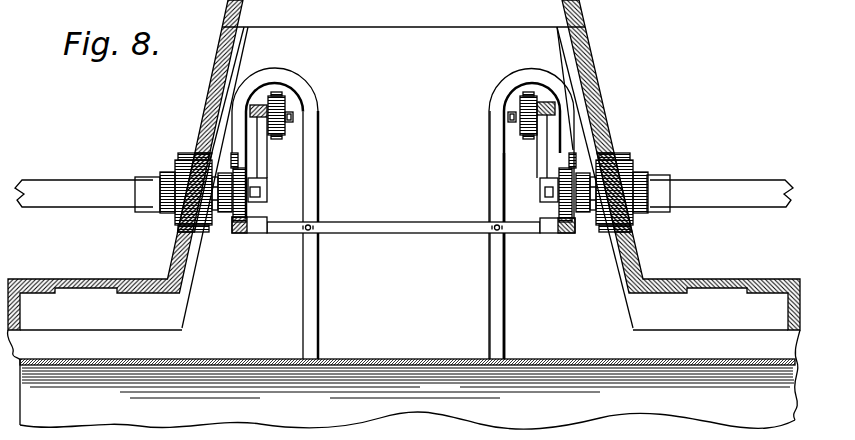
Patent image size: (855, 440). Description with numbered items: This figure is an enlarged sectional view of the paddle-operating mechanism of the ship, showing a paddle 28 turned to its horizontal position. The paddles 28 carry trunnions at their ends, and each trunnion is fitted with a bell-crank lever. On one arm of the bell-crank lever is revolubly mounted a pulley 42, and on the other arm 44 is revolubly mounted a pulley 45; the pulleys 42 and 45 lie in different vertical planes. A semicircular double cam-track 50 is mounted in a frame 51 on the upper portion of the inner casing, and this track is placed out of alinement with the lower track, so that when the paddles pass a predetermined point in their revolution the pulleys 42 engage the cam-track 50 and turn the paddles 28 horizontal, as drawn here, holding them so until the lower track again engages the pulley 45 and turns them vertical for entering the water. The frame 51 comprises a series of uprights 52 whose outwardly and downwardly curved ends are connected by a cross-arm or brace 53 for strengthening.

The paddles 28 is at (85, 200).
The pulley 42 is at (247, 223).
The arm 44 is at (540, 162).
The pulley 45 is at (537, 67).
The semicircular double cam-track 50 is at (233, 153).
The frame 51 is at (398, 235).
The uprights 52 is at (426, 235).
The cross-arm or brace 53 is at (403, 217).